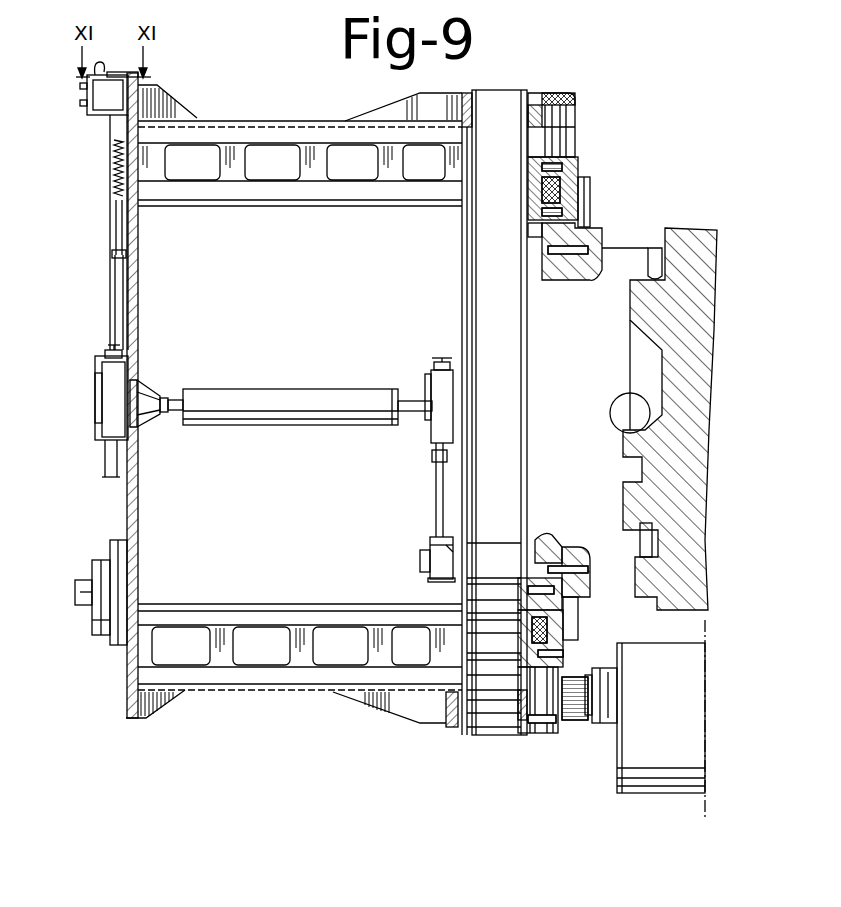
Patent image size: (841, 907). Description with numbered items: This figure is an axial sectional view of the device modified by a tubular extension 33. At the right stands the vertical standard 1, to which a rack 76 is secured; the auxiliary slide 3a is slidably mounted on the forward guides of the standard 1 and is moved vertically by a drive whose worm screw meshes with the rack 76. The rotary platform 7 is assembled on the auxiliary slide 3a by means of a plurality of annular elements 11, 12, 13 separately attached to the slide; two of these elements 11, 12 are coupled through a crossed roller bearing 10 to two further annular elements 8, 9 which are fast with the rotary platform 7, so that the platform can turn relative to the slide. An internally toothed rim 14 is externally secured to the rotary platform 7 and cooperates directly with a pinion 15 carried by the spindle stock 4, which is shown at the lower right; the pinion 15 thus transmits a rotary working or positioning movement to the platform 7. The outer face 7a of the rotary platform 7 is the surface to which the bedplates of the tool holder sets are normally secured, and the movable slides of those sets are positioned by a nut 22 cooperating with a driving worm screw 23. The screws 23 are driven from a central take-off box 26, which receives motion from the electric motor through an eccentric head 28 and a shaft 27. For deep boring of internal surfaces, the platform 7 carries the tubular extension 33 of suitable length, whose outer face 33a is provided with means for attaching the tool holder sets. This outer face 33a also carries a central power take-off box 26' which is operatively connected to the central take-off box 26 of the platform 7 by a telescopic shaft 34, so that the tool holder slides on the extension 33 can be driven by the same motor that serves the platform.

The vertical standard 1 is at (688, 250).
The auxiliary slide 3a is at (602, 277).
The spindle stock 4 is at (655, 770).
The rotary platform 7 is at (530, 392).
The outer face of the rotary platform 7a is at (463, 305).
The annular element 8 is at (516, 662).
The annular element 9 is at (568, 660).
The crossed roller bearing 10 is at (528, 636).
The annular element 11 is at (522, 605).
The annular element 12 is at (595, 595).
The annular element 13 is at (560, 568).
The internally toothed rim 14 is at (573, 132).
The pinion 15 is at (575, 712).
The nut 22 is at (110, 181).
The driving worm screw 23 is at (116, 228).
The central take-off box 26 is at (418, 411).
The central power take-off box 26' is at (127, 408).
The shaft 27 is at (437, 490).
The eccentric head 28 is at (436, 572).
The tubular extension 33 is at (285, 700).
The outer face of the tubular extension 33a is at (128, 492).
The telescopic shaft 34 is at (278, 392).
The rack 76 is at (648, 405).